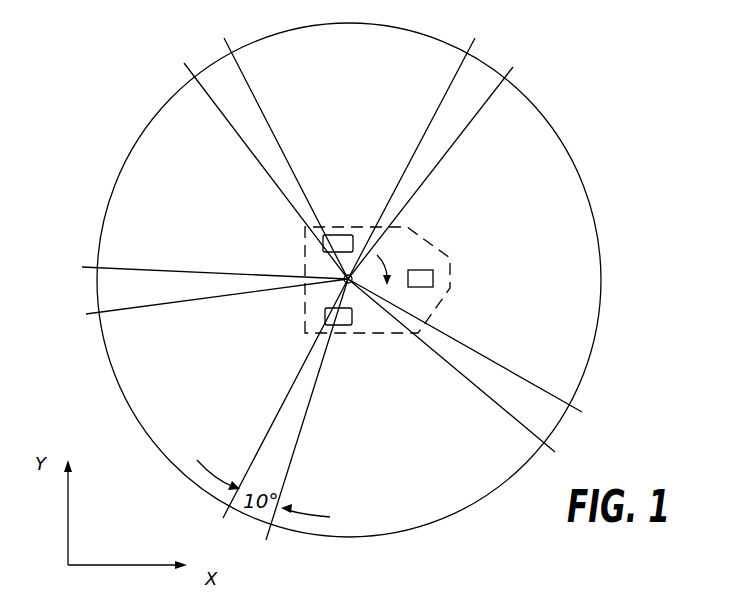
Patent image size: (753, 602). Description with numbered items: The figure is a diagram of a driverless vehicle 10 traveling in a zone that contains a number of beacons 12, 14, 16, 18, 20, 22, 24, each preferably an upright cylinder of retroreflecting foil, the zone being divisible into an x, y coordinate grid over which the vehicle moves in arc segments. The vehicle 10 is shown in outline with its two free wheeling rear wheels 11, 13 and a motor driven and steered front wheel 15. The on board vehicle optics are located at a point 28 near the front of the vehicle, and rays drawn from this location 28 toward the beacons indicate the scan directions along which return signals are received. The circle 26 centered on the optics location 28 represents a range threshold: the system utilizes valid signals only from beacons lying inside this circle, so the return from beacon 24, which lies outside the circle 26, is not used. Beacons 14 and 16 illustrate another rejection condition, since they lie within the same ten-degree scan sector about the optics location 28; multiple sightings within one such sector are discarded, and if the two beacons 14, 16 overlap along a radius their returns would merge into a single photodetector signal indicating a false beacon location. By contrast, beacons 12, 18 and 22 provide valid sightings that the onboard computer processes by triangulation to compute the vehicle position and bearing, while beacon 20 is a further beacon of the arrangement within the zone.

The driverless vehicle 10 is at (443, 253).
The rear wheel 11 is at (343, 234).
The beacon 12 is at (452, 95).
The rear wheel 13 is at (345, 320).
The beacon 14 is at (286, 411).
The front wheel 15 is at (433, 278).
The beacon 16 is at (284, 454).
The beacon 18 is at (485, 363).
The beacon 20 is at (163, 248).
The beacon 22 is at (220, 81).
The beacon 24 is at (521, 43).
The circle 26 is at (585, 185).
The location of on board vehicle optics 28 is at (326, 268).